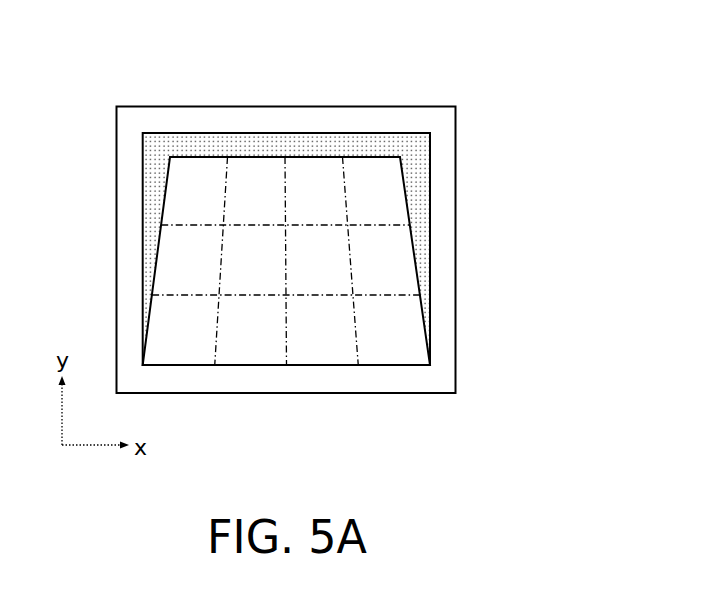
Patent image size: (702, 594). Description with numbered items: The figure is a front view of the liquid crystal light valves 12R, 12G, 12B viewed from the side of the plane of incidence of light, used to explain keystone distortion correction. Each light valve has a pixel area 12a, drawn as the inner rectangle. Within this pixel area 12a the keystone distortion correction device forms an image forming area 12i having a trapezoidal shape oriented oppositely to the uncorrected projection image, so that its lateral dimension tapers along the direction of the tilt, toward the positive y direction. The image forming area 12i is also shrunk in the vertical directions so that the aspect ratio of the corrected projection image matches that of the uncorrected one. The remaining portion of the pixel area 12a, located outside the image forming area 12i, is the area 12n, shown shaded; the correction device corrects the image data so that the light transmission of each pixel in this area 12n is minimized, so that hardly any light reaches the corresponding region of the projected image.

The liquid crystal light valve 12R is at (299, 205).
The liquid crystal light valve 12G is at (299, 205).
The liquid crystal light valve 12B is at (400, 47).
The pixel area 12a is at (547, 170).
The area located outside the image forming area 12n is at (422, 185).
The image forming area 12i is at (422, 260).